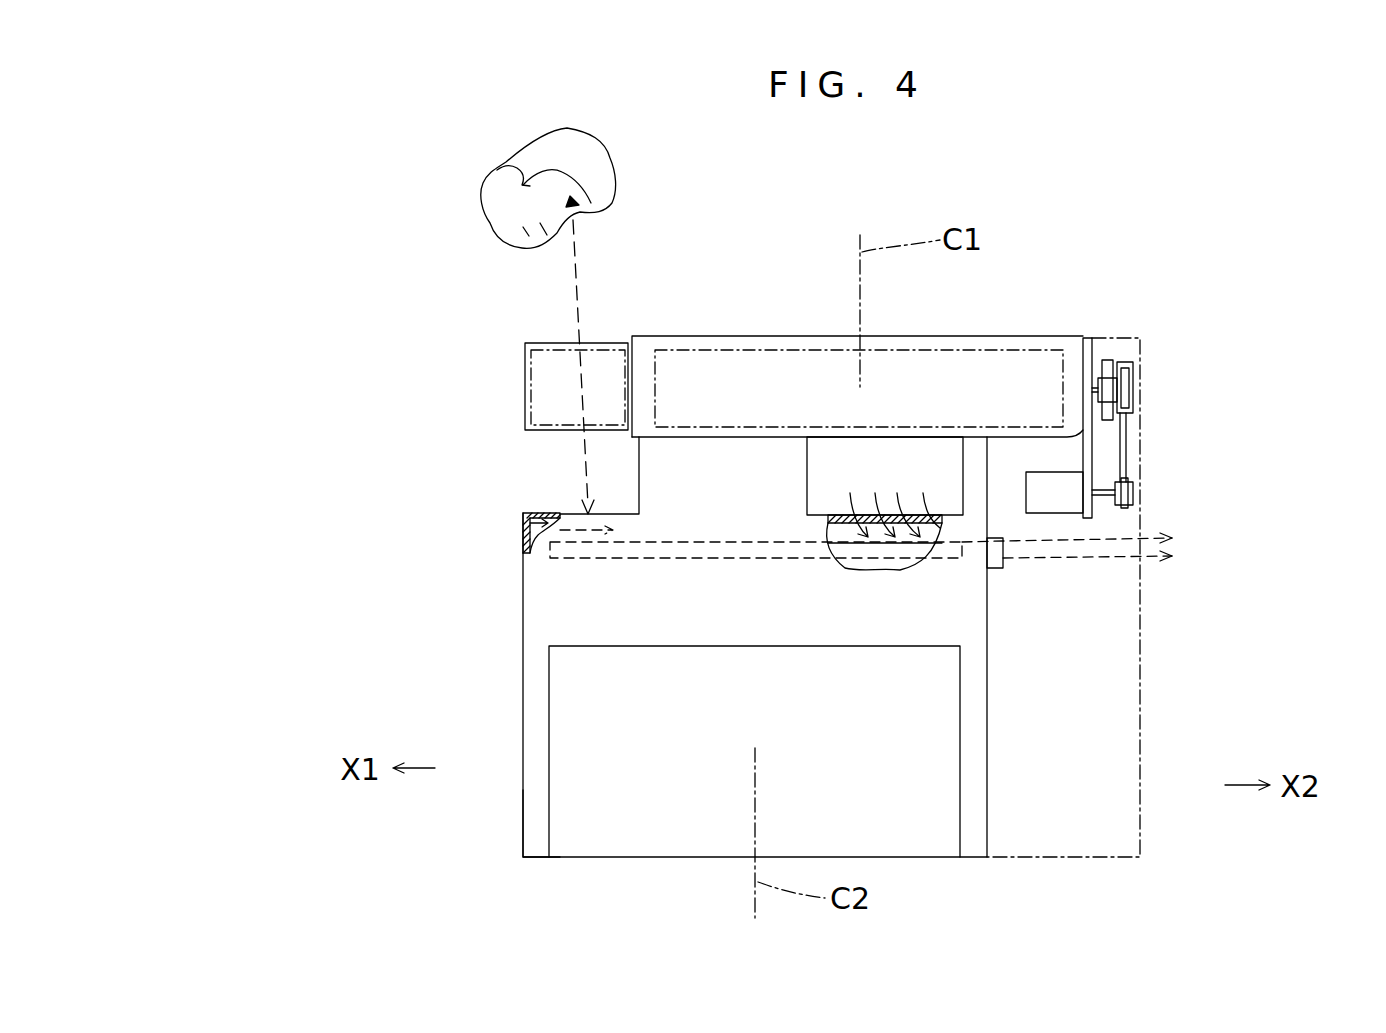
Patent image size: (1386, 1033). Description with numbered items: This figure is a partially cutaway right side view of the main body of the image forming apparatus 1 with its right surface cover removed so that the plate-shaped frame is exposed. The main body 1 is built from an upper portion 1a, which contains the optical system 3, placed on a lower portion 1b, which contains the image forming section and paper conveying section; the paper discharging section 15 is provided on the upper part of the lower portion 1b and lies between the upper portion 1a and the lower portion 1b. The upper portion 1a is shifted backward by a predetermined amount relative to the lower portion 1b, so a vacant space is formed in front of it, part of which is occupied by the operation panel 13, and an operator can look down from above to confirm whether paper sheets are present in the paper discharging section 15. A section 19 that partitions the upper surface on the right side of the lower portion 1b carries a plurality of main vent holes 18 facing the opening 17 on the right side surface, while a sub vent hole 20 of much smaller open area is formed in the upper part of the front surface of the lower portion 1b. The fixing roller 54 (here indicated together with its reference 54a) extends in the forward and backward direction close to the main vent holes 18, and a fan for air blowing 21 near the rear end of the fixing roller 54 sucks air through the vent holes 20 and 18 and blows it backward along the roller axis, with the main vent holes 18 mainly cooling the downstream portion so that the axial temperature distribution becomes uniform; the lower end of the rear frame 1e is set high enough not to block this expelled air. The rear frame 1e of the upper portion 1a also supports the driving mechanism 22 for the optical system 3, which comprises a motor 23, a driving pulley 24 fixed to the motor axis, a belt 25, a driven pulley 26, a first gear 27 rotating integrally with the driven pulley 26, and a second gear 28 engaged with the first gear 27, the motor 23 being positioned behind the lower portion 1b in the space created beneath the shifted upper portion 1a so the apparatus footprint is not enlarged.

The main body of the image forming apparatus 1 is at (494, 728).
The upper portion 1a is at (645, 345).
The lower portion 1b is at (530, 806).
The rear frame 1e is at (1092, 510).
The optical system 3 is at (803, 350).
The operation panel 13 is at (547, 342).
The paper discharging section 15 is at (573, 513).
The opening 17 is at (857, 457).
The main vent holes 18 is at (908, 517).
The section 19 is at (837, 515).
The sub vent hole 20 is at (523, 520).
The fan for air blowing 21 is at (1003, 560).
The driving mechanism 22 is at (1160, 441).
The motor 23 is at (1051, 505).
The driving pulley 24 is at (1133, 491).
The belt 25 is at (1127, 457).
The driven pulley 26 is at (1133, 405).
The first gear 27 is at (1107, 388).
The second gear 28 is at (1103, 360).
The fixing roller 54 is at (776, 612).
The guide plate opening 54a is at (575, 559).